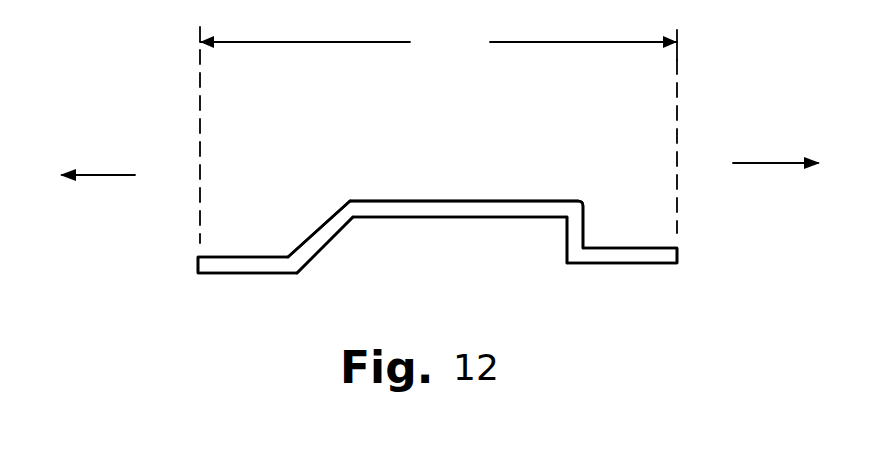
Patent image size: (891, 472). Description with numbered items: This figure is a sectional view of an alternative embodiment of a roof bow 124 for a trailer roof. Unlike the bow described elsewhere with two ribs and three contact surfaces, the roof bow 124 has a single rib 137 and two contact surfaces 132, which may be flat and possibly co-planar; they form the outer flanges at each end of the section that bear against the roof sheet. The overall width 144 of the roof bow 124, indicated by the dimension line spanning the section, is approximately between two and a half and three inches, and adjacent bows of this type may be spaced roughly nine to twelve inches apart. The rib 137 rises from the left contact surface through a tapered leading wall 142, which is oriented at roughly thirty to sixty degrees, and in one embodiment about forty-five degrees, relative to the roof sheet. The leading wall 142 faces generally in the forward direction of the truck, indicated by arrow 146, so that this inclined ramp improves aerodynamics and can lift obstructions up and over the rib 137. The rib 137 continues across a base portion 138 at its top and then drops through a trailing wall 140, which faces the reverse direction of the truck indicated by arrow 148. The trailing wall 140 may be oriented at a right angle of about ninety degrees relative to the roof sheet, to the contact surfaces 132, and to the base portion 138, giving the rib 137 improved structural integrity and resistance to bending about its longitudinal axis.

The roof bow 124 is at (478, 130).
The contact surfaces 132 is at (220, 275).
The rib 137 is at (390, 208).
The base portion 138 is at (463, 208).
The trailing wall 140 is at (577, 230).
The leading wall 142 is at (325, 232).
The width 144 is at (438, 135).
The arrow 146 is at (98, 173).
The arrow 148 is at (768, 163).